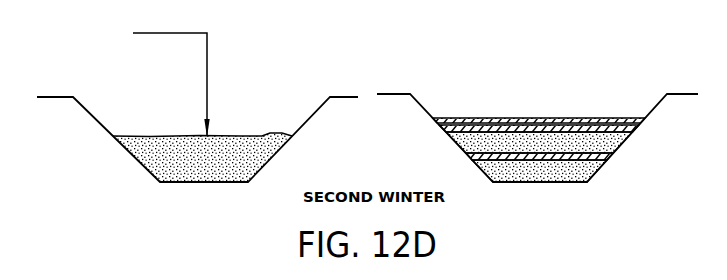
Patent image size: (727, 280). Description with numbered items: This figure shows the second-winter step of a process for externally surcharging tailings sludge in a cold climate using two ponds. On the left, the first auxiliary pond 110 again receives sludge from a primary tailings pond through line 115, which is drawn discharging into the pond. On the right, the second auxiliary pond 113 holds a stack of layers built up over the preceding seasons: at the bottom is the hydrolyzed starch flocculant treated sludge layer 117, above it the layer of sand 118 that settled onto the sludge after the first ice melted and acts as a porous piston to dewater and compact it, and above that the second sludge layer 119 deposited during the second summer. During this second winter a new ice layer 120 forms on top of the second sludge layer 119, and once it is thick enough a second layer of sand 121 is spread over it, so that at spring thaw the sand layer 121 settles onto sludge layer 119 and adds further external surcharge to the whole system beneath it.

The first auxiliary pond 110 is at (236, 136).
The second auxiliary pond 113 is at (692, 128).
The line 115 is at (207, 33).
The sludge layer 117 is at (587, 183).
The layer of sand 118 is at (604, 155).
The second sludge layer 119 is at (617, 137).
The ice layer 120 is at (442, 133).
The second layer of sand 121 is at (527, 117).